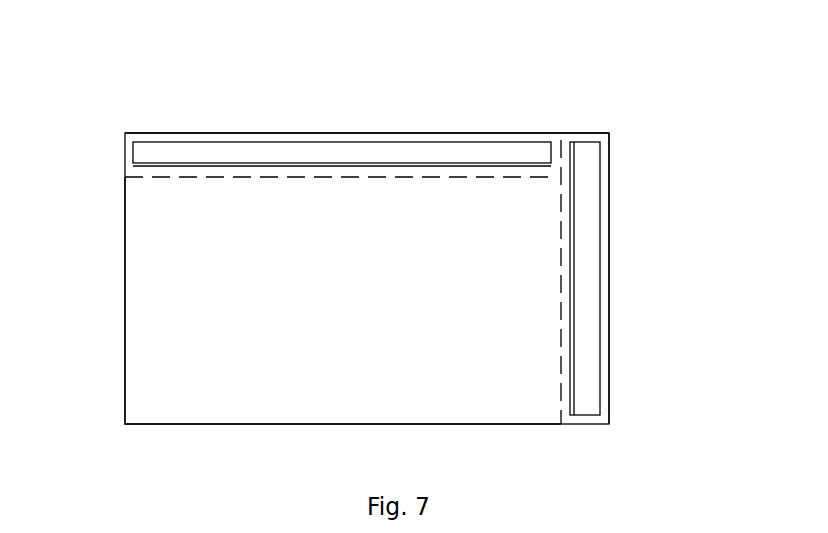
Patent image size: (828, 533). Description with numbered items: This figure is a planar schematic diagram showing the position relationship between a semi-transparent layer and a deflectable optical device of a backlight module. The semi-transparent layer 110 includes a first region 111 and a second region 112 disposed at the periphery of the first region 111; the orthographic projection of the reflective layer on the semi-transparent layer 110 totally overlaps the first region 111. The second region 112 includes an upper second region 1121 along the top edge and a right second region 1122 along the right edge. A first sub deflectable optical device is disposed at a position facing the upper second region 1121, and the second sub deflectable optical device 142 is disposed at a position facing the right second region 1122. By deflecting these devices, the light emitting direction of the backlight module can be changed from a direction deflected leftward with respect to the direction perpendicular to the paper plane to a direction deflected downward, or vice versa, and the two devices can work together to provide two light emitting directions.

The semi-transparent layer 110 is at (416, 472).
The first region 111 is at (302, 300).
The second region 112 is at (404, 230).
The upper second region 1121 is at (367, 129).
The right second region 1122 is at (617, 253).
The second sub deflectable optical device 142 is at (415, 253).